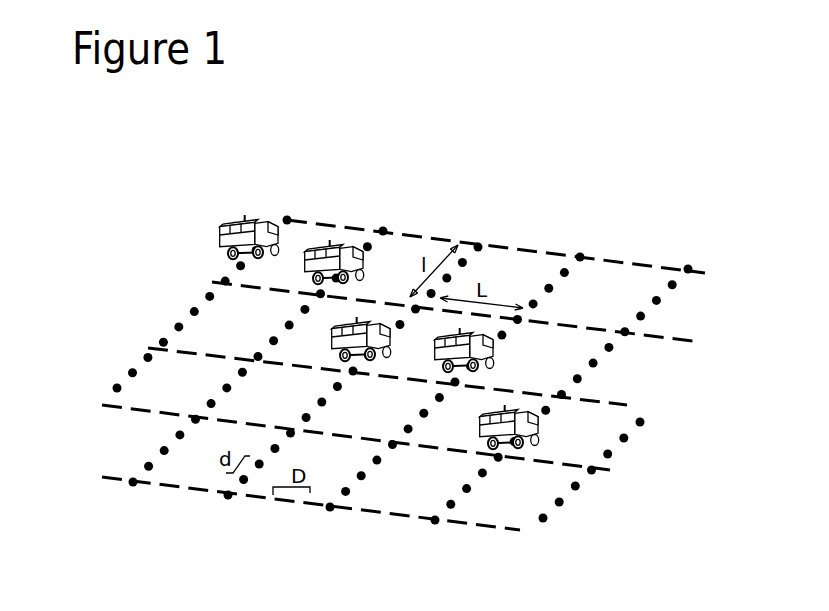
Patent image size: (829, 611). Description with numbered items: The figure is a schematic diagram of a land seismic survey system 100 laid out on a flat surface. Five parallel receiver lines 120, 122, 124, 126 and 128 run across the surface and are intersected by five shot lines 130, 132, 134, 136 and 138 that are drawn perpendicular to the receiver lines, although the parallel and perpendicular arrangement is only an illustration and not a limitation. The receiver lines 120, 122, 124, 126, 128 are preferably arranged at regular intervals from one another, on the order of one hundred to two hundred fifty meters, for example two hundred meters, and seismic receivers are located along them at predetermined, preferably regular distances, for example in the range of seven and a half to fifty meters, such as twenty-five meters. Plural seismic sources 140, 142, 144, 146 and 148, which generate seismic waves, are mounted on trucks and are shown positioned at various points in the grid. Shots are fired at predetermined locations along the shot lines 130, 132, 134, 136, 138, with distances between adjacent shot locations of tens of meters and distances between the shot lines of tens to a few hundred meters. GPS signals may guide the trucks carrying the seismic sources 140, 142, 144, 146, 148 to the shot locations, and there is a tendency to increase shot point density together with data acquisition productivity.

The land seismic survey system 100 is at (615, 202).
The receiver line 120 is at (503, 532).
The receiver line 122 is at (603, 472).
The receiver line 124 is at (627, 405).
The receiver line 126 is at (690, 341).
The receiver line 128 is at (716, 274).
The shot line 130 is at (117, 388).
The shot line 132 is at (132, 482).
The shot line 134 is at (227, 495).
The shot line 136 is at (330, 506).
The shot line 138 is at (436, 520).
The seismic source 140 is at (263, 215).
The seismic source 142 is at (345, 240).
The seismic source 144 is at (333, 330).
The seismic source 146 is at (495, 360).
The seismic source 148 is at (530, 450).